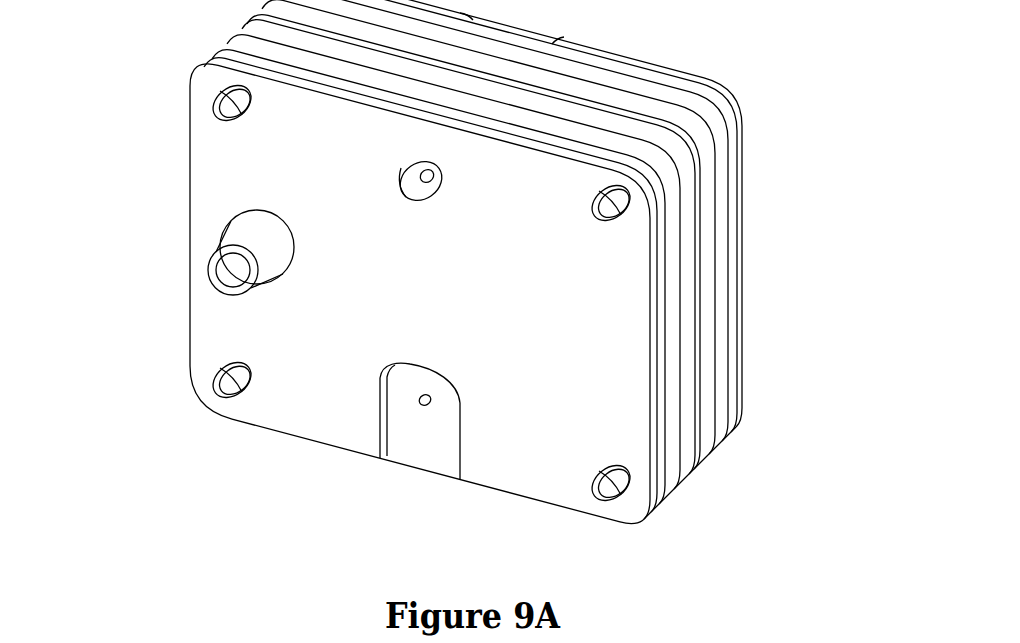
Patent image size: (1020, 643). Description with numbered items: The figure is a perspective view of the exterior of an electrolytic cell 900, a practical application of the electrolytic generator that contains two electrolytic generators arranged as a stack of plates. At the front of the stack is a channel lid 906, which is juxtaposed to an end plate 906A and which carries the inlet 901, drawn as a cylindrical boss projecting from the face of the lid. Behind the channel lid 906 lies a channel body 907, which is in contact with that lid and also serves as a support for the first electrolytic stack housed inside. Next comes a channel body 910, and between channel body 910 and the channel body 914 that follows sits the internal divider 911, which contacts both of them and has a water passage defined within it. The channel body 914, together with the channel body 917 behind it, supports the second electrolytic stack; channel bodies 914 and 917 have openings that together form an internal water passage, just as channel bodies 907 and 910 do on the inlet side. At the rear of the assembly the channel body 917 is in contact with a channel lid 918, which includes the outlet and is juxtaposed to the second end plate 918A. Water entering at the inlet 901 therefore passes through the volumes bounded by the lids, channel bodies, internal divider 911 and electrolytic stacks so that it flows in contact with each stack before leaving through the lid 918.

The electrolytic cell 900 is at (190, 40).
The inlet 901 is at (233, 275).
The channel lid 906 is at (662, 428).
The end plate 906A is at (357, 412).
The channel body 907 is at (675, 390).
The channel body 910 is at (687, 353).
The internal divider 911 is at (697, 335).
The channel body 914 is at (712, 305).
The channel body 917 is at (725, 252).
The channel lid 918 is at (733, 185).
The end plate 918A is at (742, 135).